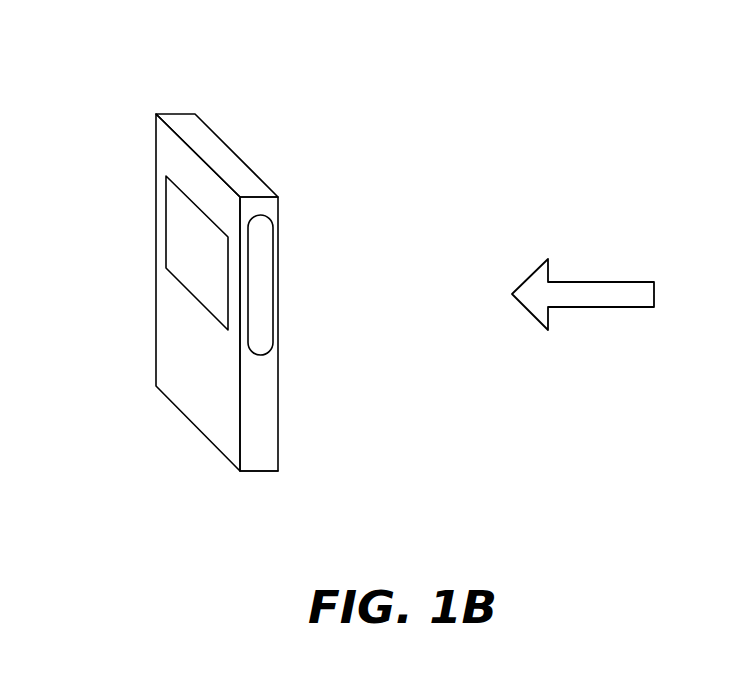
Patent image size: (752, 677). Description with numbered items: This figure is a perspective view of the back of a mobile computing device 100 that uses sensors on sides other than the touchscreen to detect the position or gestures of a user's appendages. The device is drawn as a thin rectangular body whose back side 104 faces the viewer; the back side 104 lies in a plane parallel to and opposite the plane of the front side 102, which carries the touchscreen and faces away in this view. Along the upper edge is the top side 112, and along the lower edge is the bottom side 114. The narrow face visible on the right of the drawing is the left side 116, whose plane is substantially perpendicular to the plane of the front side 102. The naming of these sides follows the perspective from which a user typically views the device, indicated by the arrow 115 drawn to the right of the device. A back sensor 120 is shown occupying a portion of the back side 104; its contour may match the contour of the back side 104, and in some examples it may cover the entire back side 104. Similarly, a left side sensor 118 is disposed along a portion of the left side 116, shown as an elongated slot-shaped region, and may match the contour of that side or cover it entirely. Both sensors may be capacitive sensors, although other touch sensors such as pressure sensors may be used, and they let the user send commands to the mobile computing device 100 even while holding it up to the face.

The mobile computing device 100 is at (104, 131).
The front side 102 is at (280, 378).
The back side 104 is at (173, 378).
The top side 112 is at (240, 177).
The bottom side 114 is at (260, 472).
The left side 116 is at (263, 412).
The left side sensor 118 is at (263, 290).
The back sensor 120 is at (187, 253).
The arrow 115 is at (593, 281).